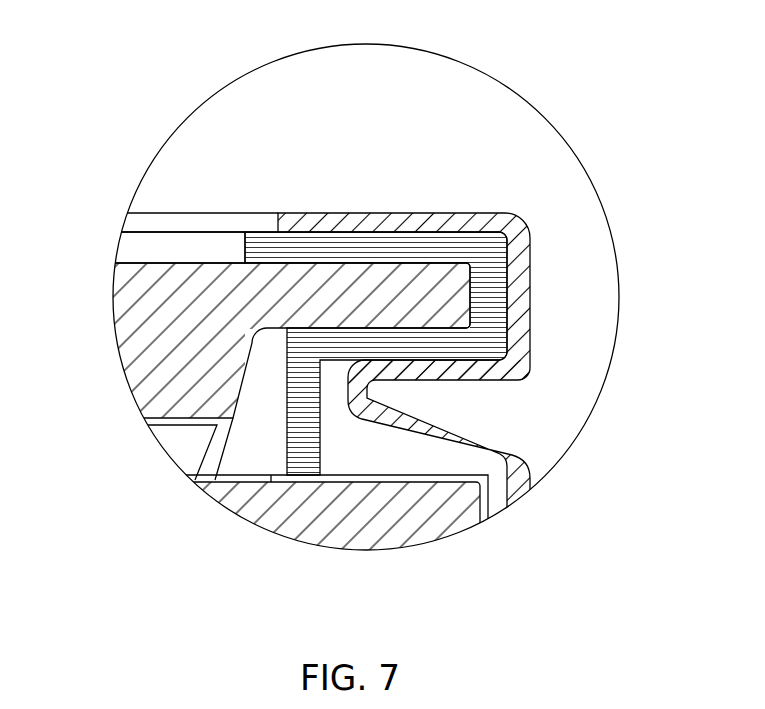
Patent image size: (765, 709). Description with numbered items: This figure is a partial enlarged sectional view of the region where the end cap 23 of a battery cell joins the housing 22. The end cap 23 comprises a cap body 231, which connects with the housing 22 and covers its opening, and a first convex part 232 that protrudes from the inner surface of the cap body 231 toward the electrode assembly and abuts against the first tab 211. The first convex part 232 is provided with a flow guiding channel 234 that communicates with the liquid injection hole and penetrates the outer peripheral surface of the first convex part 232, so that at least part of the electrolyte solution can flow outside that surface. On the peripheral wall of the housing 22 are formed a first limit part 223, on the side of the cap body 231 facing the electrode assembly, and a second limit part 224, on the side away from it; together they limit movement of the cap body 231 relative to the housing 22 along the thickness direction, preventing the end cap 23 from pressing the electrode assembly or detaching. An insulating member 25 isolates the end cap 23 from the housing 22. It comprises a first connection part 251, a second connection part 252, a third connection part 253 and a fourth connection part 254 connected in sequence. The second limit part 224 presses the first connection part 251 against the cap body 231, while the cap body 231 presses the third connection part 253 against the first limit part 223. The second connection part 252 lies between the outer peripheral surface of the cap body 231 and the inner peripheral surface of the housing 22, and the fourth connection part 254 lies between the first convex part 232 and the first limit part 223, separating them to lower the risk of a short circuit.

The housing 22 is at (538, 475).
The end cap 23 is at (142, 253).
The insulating member 25 is at (272, 443).
The first tab 211 is at (390, 533).
The first limit part 223 is at (390, 417).
The second limit part 224 is at (352, 223).
The cap body 231 is at (285, 297).
The first convex part 232 is at (160, 382).
The flow guiding channel 234 is at (188, 440).
The first connection part 251 is at (430, 250).
The second connection part 252 is at (485, 298).
The third connection part 253 is at (428, 343).
The fourth connection part 254 is at (303, 443).